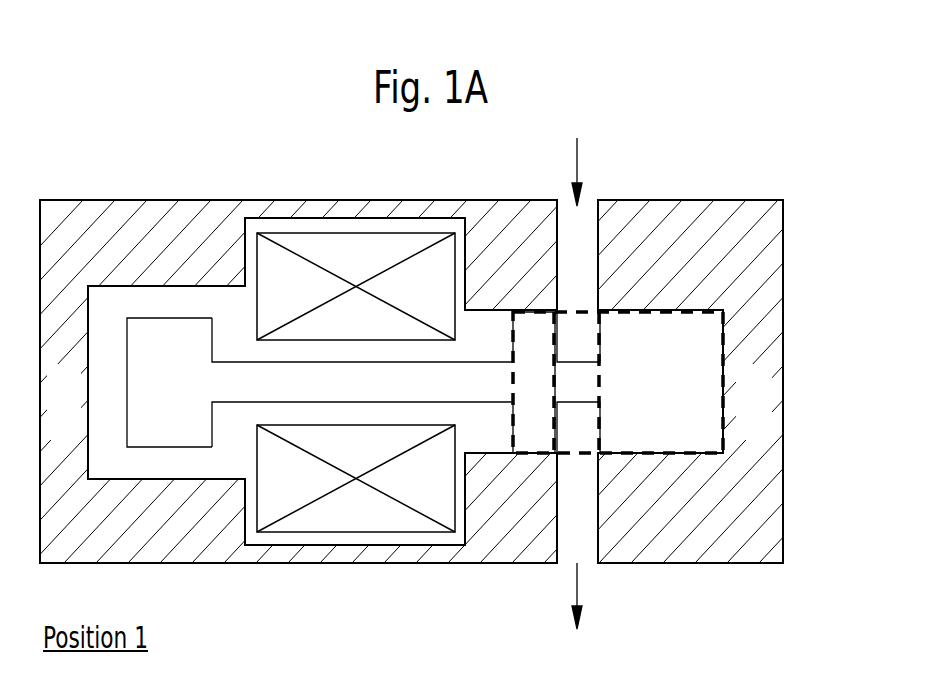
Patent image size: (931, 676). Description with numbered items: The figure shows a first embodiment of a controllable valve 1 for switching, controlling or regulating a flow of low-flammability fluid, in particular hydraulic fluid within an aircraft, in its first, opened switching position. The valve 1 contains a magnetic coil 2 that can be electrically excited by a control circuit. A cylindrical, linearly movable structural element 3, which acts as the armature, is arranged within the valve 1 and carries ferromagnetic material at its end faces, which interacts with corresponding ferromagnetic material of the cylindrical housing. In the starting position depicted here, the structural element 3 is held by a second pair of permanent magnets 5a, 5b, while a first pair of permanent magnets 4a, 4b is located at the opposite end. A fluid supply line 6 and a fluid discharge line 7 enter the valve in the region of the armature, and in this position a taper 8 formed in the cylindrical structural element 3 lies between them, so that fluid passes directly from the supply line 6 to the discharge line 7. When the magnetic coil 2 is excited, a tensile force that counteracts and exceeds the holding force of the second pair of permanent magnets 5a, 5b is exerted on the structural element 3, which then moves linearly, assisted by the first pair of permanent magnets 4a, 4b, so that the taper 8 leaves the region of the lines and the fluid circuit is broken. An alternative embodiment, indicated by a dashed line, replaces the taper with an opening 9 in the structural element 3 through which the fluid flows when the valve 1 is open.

The controllable valve 1 is at (777, 594).
The magnetic coil 2 is at (363, 273).
The structural element 3 is at (364, 394).
The first permanent magnet 4a is at (51, 435).
The first permanent magnet 4b is at (173, 435).
The second permanent magnet 5a is at (706, 435).
The second permanent magnet 5b is at (767, 435).
The fluid supply line 6 is at (578, 156).
The fluid discharge line 7 is at (578, 591).
The taper 8 is at (569, 394).
The opening 9 is at (582, 330).